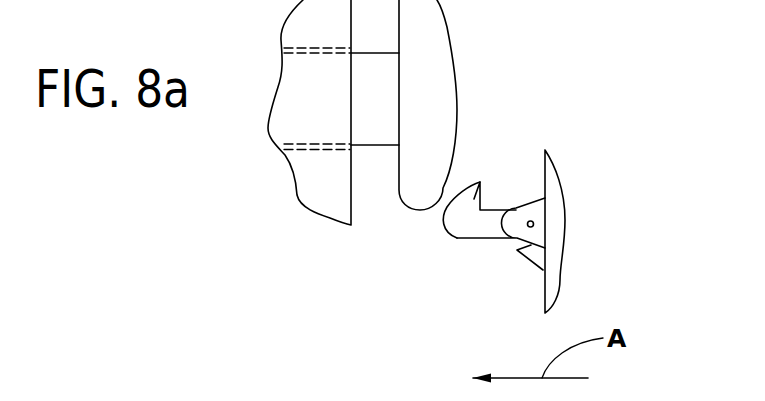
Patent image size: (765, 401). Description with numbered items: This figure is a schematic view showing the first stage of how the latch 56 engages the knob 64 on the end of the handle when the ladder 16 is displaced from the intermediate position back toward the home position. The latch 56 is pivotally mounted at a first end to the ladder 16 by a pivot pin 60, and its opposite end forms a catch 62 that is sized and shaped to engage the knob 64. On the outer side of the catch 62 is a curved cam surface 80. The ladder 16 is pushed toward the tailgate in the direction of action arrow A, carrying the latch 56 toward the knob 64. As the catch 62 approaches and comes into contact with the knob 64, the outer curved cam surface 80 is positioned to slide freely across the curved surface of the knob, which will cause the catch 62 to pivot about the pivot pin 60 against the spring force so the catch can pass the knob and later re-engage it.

The ladder 16 is at (555, 272).
The latch 56 is at (490, 238).
The pivot pin 60 is at (533, 222).
The catch 62 is at (474, 199).
The knob 64 is at (452, 85).
The outer curved cam surface 80 is at (443, 227).